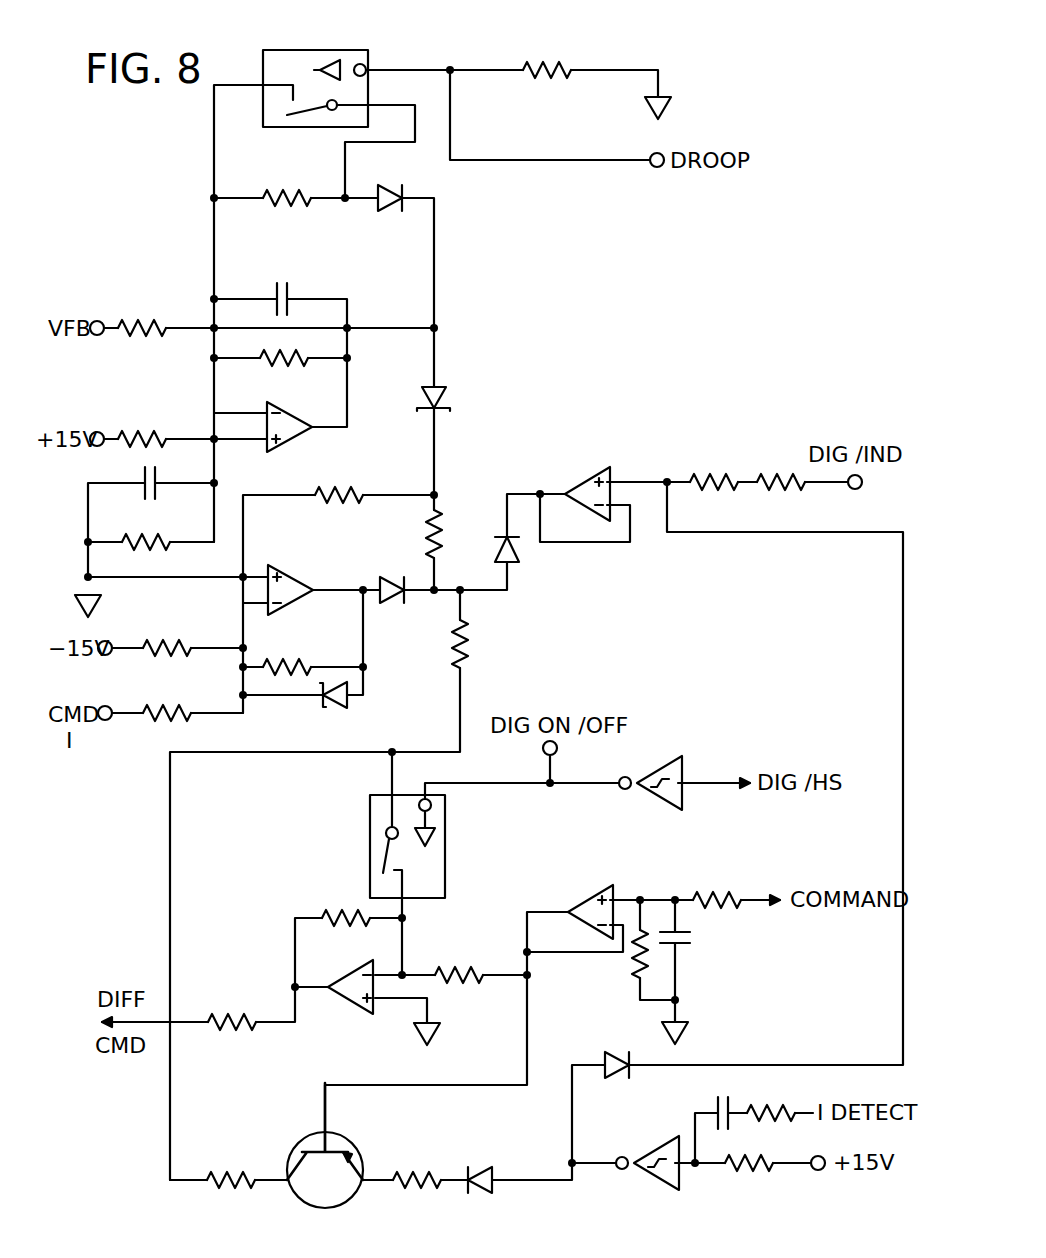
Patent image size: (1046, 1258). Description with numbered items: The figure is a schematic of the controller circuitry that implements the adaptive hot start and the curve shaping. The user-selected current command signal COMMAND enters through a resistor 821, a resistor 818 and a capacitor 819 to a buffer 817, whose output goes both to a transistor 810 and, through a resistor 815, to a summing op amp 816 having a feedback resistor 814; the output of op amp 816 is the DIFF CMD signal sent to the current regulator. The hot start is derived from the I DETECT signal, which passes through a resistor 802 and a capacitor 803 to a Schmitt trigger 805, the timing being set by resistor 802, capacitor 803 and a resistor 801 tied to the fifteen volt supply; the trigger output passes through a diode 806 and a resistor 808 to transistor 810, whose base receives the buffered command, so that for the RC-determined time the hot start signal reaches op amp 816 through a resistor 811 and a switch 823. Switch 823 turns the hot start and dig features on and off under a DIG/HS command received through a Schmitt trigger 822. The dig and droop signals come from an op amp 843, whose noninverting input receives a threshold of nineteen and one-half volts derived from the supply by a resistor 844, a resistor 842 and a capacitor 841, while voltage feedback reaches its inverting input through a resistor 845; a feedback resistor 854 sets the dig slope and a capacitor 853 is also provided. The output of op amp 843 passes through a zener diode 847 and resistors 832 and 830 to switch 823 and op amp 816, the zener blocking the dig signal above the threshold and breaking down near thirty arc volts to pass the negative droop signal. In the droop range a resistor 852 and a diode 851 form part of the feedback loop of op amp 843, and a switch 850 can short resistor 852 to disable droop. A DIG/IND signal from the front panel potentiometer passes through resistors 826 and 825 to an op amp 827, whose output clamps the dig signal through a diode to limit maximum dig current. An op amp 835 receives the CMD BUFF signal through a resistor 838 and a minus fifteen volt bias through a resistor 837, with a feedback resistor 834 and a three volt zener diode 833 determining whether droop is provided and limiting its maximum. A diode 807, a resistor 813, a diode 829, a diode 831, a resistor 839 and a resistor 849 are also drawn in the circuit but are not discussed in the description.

The resistor 801 is at (753, 1170).
The resistor 802 is at (793, 1105).
The capacitor 803 is at (708, 1108).
The Schmitt trigger 805 is at (643, 1140).
The diode 806 is at (490, 1170).
The diode 807 is at (610, 1052).
The resistor 808 is at (420, 1172).
The transistor 810 is at (363, 1146).
The resistor 811 is at (223, 1172).
The resistor 813 is at (233, 1011).
The feedback resistor 814 is at (332, 912).
The resistor 815 is at (446, 966).
The summing op amp 816 is at (342, 972).
The buffer 817 is at (578, 886).
The resistor 818 is at (634, 980).
The capacitor 819 is at (691, 938).
The resistor 821 is at (730, 892).
The Schmitt trigger 822 is at (681, 764).
The switch 823 is at (368, 830).
The resistor 825 is at (783, 492).
The resistor 826 is at (703, 469).
The op amp 827 is at (583, 466).
The diode 829 is at (523, 562).
The resistor 830 is at (468, 637).
The diode 831 is at (388, 582).
The resistor 832 is at (444, 550).
The zener diode 833 is at (331, 708).
The feedback resistor 834 is at (273, 664).
The op amp 835 is at (280, 565).
The resistor 837 is at (150, 641).
The resistor 838 is at (161, 708).
The resistor 839 is at (339, 492).
The capacitor 841 is at (142, 480).
The resistor 842 is at (138, 538).
The op amp 843 is at (313, 430).
The resistor 844 is at (144, 438).
The resistor 845 is at (142, 322).
The zener diode 847 is at (445, 404).
The resistor 849 is at (528, 64).
The switch 850 is at (294, 50).
The diode 851 is at (386, 190).
The resistor 852 is at (273, 192).
The capacitor 853 is at (291, 296).
The feedback resistor 854 is at (280, 364).